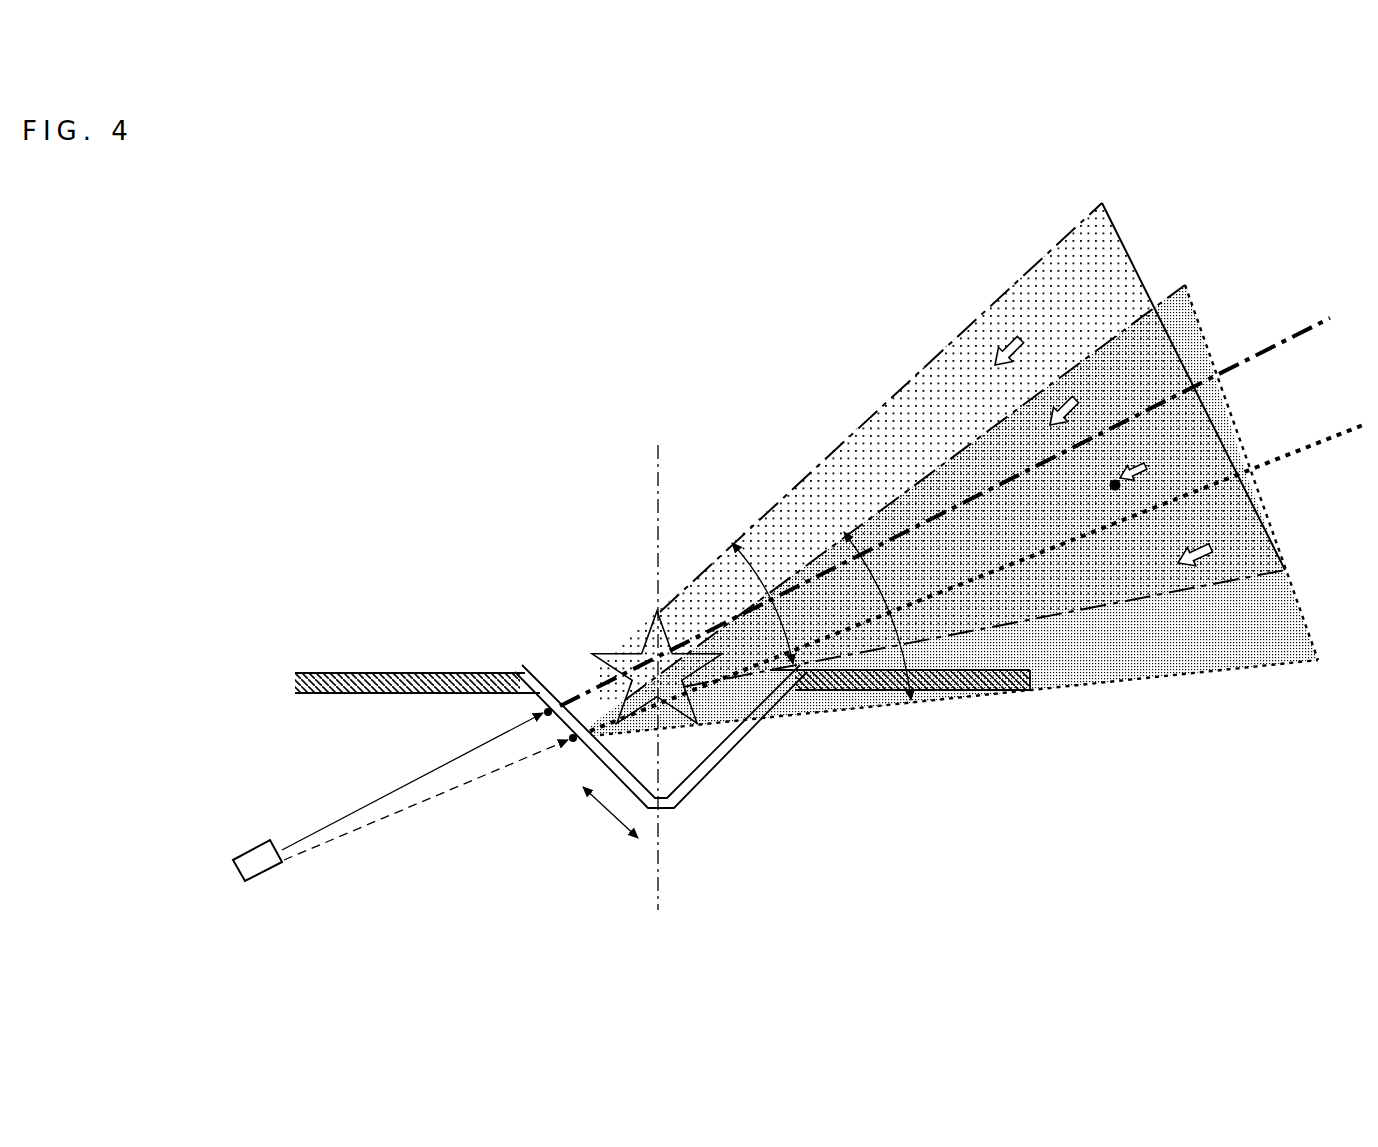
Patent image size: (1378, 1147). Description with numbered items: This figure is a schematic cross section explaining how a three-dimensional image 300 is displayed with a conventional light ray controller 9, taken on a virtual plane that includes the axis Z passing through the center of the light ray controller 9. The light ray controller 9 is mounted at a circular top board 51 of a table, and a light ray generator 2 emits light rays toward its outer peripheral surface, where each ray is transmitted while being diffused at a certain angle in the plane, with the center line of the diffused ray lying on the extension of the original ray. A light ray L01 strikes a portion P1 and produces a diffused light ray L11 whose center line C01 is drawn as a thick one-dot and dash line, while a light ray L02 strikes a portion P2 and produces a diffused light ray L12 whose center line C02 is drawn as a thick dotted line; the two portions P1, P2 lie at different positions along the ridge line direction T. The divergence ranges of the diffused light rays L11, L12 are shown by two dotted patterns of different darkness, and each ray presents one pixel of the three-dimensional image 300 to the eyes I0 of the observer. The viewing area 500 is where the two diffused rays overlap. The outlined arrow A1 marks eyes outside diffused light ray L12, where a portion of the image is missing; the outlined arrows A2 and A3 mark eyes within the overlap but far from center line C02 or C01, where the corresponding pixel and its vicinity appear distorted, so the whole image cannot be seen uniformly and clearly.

The light ray generator 2 is at (262, 866).
The conventional light ray controller 9 is at (745, 742).
The top board 51 is at (358, 673).
The three-dimensional image 300 is at (627, 663).
The viewing area 500 is at (1105, 520).
The portion P1 is at (545, 712).
The portion P2 is at (573, 740).
The light ray L01 is at (455, 757).
The light ray L02 is at (412, 805).
The diffused light ray L11 is at (812, 475).
The diffused light ray L12 is at (953, 450).
The center line C01 is at (1280, 345).
The center line C02 is at (1322, 442).
The outlined arrow A1 is at (1008, 338).
The outlined arrow A2 is at (1073, 395).
The outlined arrow A3 is at (1210, 540).
The eyes of the observer I0 is at (1130, 468).
The axis Z is at (655, 480).
The ridge line direction T is at (610, 822).